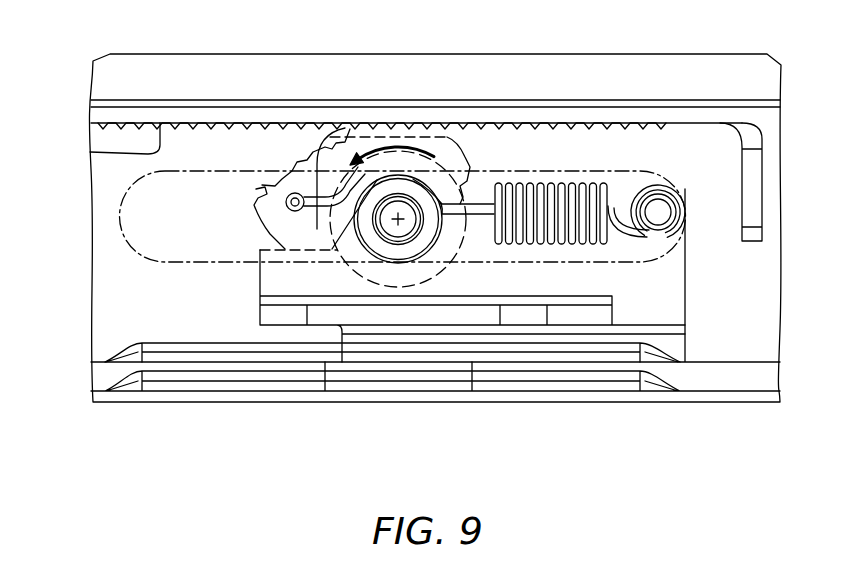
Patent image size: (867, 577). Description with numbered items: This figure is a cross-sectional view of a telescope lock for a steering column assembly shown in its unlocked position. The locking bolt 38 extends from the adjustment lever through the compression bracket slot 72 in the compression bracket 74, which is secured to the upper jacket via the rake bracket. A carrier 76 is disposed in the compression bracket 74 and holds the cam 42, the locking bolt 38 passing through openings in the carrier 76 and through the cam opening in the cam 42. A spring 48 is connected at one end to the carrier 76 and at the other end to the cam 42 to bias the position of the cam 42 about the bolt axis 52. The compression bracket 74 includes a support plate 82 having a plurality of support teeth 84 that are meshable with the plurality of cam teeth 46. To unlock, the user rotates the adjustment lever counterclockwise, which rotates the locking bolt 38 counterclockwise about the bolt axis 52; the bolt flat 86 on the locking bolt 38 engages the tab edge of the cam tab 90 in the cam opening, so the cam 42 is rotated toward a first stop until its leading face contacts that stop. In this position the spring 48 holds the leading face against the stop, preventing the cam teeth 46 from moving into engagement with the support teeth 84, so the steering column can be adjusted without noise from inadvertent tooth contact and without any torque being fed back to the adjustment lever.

The locking bolt 38 is at (428, 243).
The cam 42 is at (283, 222).
The cam teeth 46 is at (256, 190).
The spring 48 is at (558, 186).
The bolt axis 52 is at (375, 230).
The compression bracket slot 72 is at (133, 216).
The compression bracket 74 is at (117, 308).
The carrier 76 is at (672, 288).
The support plate 82 is at (113, 114).
The support teeth 84 is at (90, 152).
The bolt flat 86 is at (377, 181).
The cam tab 90 is at (376, 192).